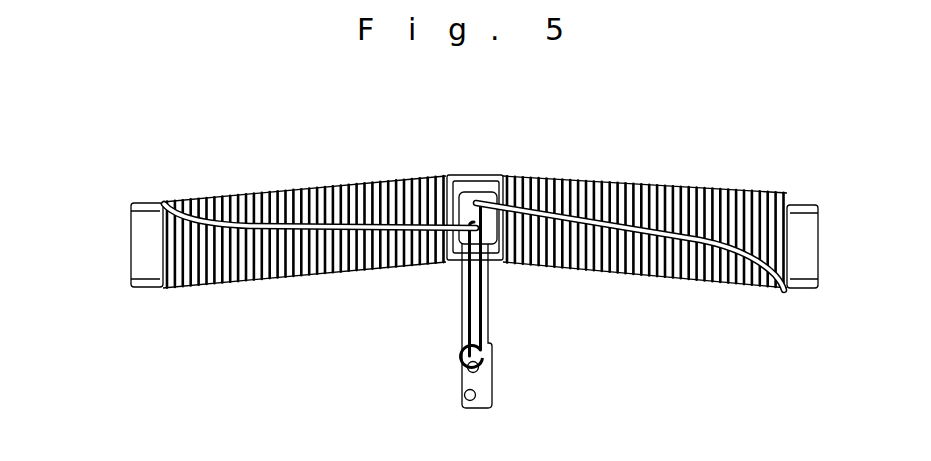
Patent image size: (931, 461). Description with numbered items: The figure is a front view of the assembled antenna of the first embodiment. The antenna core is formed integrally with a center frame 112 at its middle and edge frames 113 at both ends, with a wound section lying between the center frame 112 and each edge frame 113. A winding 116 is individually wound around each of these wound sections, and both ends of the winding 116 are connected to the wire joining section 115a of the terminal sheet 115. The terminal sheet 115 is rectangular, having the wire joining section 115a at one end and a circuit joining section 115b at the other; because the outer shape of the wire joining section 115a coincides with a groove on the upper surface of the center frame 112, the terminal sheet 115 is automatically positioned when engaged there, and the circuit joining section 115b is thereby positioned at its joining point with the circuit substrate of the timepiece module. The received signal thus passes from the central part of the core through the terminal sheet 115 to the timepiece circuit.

The center frame 112 is at (472, 175).
The edge frame 113 is at (138, 252).
The terminal sheet 115 is at (461, 288).
The wire joining section 115a is at (460, 198).
The circuit joining section 115b is at (485, 398).
The winding 116 is at (605, 183).